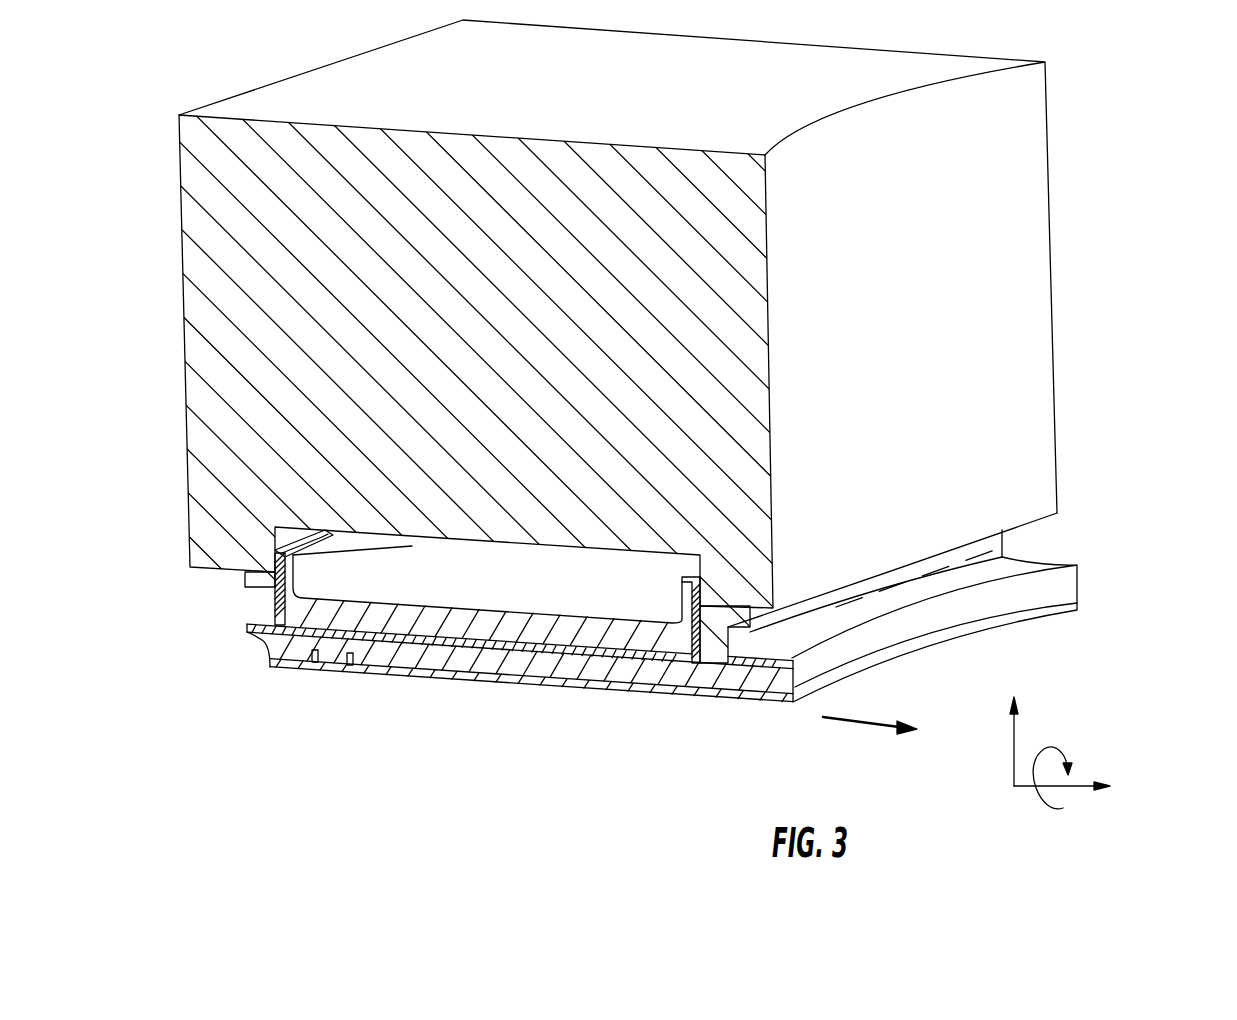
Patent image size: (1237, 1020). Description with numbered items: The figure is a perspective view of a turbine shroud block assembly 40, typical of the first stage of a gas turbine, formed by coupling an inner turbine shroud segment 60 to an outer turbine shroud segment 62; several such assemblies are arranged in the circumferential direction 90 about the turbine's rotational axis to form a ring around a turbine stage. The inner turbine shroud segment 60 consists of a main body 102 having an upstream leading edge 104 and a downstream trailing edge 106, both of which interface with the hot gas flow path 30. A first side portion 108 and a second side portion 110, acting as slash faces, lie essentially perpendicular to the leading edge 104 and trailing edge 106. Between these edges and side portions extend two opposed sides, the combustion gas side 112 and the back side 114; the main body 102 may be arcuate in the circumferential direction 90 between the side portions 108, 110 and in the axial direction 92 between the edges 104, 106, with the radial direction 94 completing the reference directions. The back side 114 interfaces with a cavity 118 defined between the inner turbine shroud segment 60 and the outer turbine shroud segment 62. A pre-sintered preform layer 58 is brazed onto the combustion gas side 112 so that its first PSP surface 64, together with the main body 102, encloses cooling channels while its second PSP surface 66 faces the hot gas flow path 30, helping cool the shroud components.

The hot gas flow path 30 is at (868, 722).
The turbine shroud block assembly 40 is at (618, 399).
The pre-sintered preform layer 58 is at (592, 700).
The inner turbine shroud segment 60 is at (1078, 600).
The outer turbine shroud segment 62 is at (1058, 128).
The first PSP surface 64 is at (402, 670).
The second PSP surface 66 is at (362, 670).
The circumferential direction 90 is at (1031, 803).
The axial direction 92 is at (1078, 782).
The radial direction 94 is at (1013, 740).
The main body 102 is at (477, 640).
The leading edge 104 is at (268, 652).
The trailing edge 106 is at (1012, 610).
The first side portion 108 is at (652, 682).
The second side portion 110 is at (1078, 563).
The combustion gas side 112 is at (710, 703).
The back side 114 is at (597, 592).
The cavity 118 is at (573, 580).